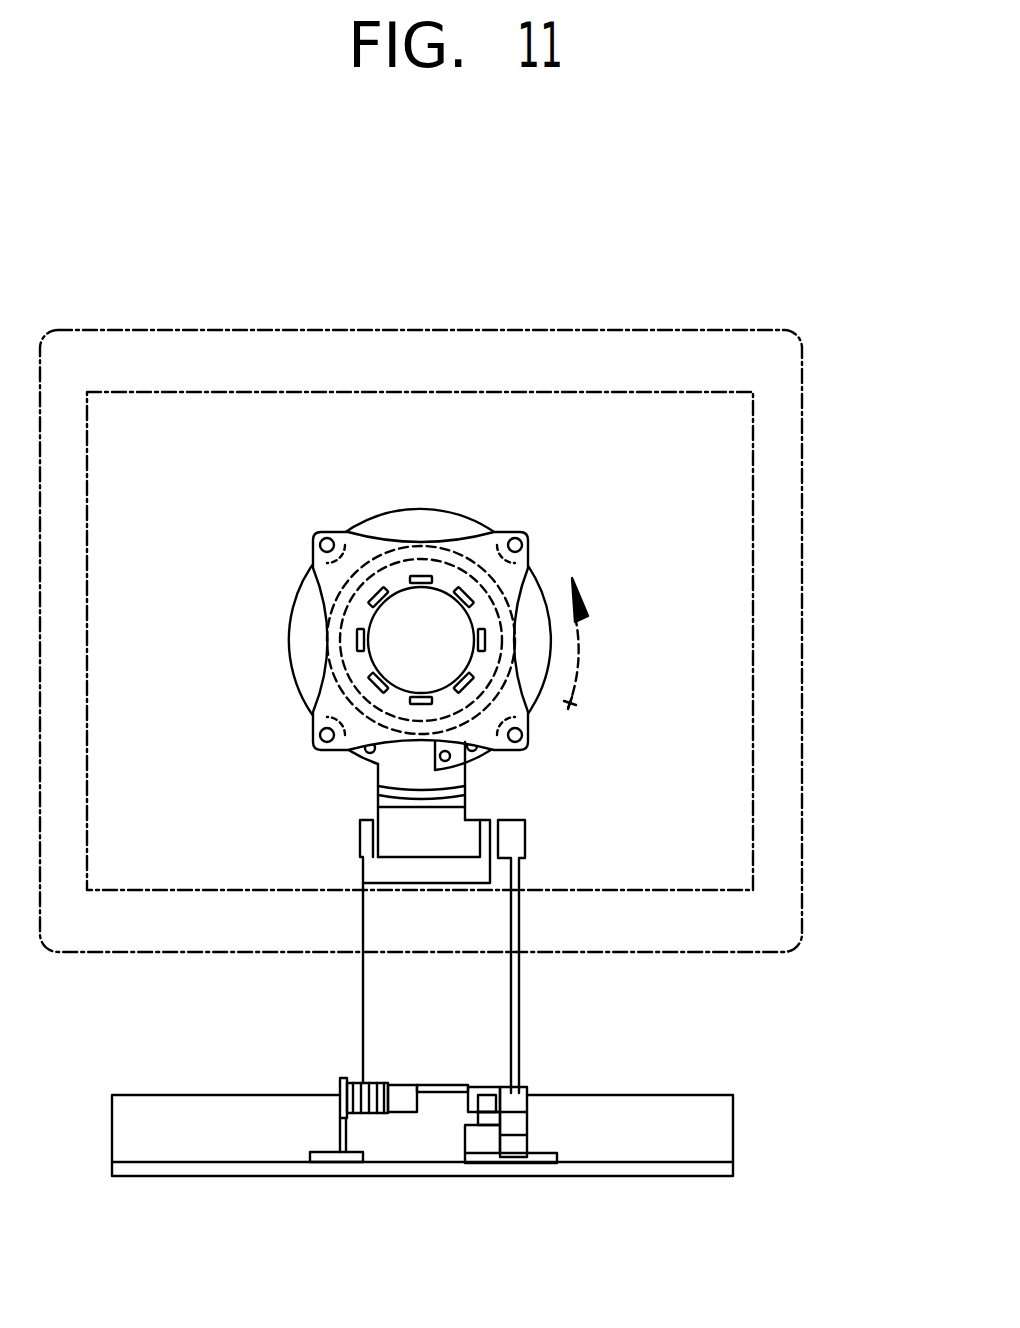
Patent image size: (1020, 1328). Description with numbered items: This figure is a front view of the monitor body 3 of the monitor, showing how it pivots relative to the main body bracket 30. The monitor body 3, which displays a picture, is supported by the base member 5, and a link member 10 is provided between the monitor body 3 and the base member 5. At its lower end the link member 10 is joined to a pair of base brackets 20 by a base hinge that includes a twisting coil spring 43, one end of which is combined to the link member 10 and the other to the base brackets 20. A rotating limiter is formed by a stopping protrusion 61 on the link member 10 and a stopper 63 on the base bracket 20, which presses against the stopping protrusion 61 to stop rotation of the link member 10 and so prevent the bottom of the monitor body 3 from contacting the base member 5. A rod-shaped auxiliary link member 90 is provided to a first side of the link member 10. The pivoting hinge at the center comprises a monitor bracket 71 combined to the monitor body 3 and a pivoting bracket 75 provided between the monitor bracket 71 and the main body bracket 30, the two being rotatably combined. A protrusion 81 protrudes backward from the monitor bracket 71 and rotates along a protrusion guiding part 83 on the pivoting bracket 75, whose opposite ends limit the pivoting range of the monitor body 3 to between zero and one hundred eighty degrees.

The monitor body 3 is at (777, 683).
The base member 5 is at (643, 1178).
The link member 10 is at (490, 1020).
The base bracket 20 is at (325, 1153).
The main body bracket 30 is at (420, 843).
The twisting coil spring 43 is at (347, 1118).
The stopping protrusion 61 is at (482, 1126).
The stopper 63 is at (507, 1120).
The monitor bracket 71 is at (530, 572).
The pivoting bracket 75 is at (535, 637).
The protrusion 81 is at (570, 703).
The protrusion guiding part 83 is at (420, 547).
The auxiliary link member 90 is at (518, 987).